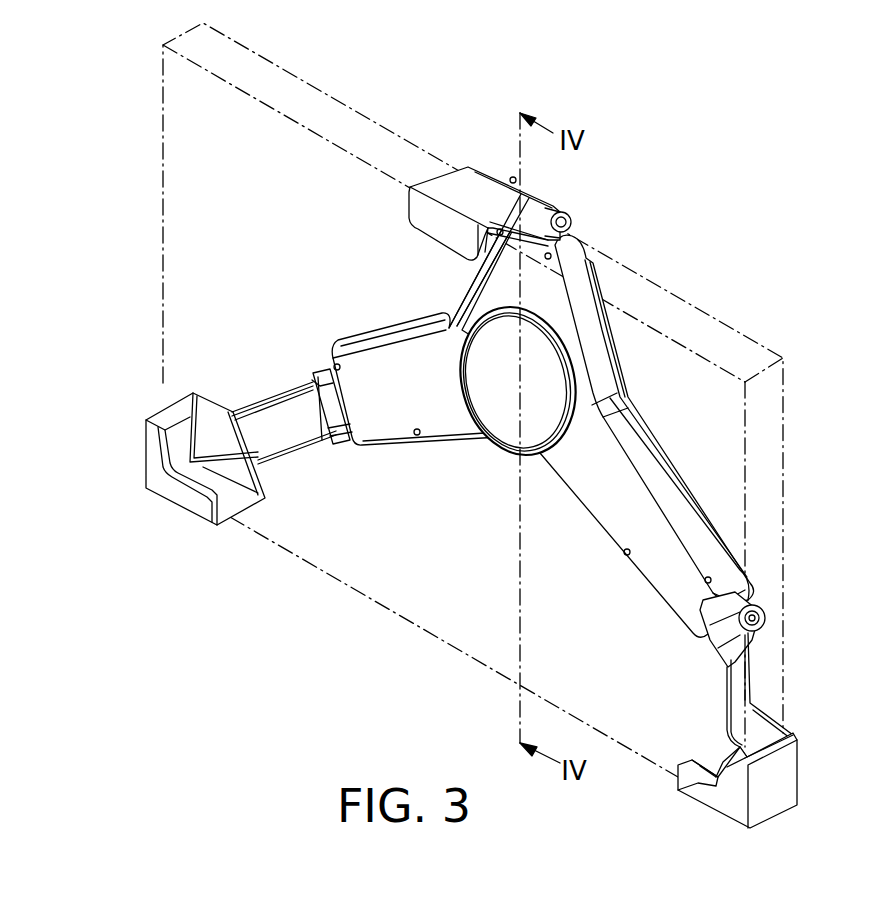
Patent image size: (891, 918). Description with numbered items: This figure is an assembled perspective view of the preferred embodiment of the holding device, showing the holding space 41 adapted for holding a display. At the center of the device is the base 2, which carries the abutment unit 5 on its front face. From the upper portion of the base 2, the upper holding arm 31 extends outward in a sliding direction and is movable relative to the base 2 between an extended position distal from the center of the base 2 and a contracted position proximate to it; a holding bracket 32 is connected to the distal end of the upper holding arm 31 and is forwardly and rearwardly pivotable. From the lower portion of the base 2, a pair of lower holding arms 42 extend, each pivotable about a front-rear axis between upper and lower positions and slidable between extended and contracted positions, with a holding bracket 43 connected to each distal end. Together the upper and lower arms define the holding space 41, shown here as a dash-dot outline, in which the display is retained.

The base 2 is at (642, 388).
The abutment unit 5 is at (500, 457).
The upper holding arm 31 is at (572, 222).
The holding bracket 32 is at (443, 170).
The holding space 41 is at (338, 578).
The lower holding arm 42 is at (333, 445).
The holding bracket 43 is at (178, 410).